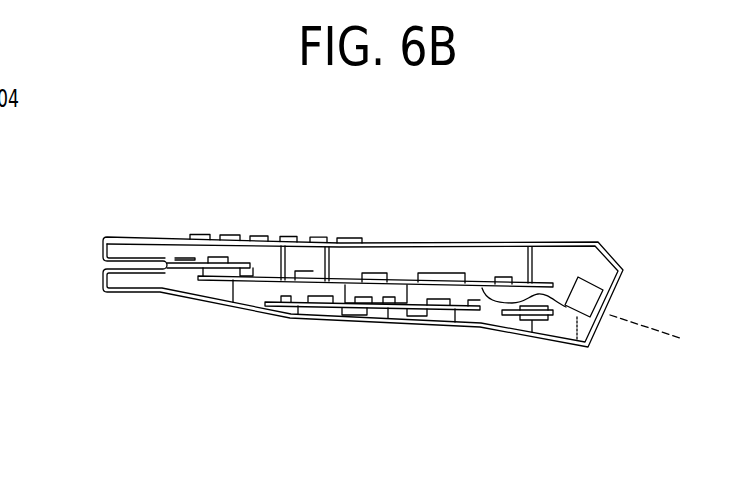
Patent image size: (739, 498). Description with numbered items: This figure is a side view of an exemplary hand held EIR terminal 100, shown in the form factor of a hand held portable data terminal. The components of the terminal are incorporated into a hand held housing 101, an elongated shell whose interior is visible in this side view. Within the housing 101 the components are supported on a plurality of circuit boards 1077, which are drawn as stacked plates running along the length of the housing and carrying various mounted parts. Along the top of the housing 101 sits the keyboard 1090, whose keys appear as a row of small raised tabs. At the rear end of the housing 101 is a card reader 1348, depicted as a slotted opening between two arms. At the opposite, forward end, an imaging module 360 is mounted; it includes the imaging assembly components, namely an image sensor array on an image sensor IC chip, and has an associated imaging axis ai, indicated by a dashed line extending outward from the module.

The EIR terminal 100 is at (550, 156).
The hand held housing 101 is at (583, 243).
The keyboard 1090 is at (244, 226).
The circuit boards 1077 is at (482, 283).
The card reader 1348 is at (86, 267).
The imaging module 360 is at (596, 281).
The imaging axis ai is at (661, 336).